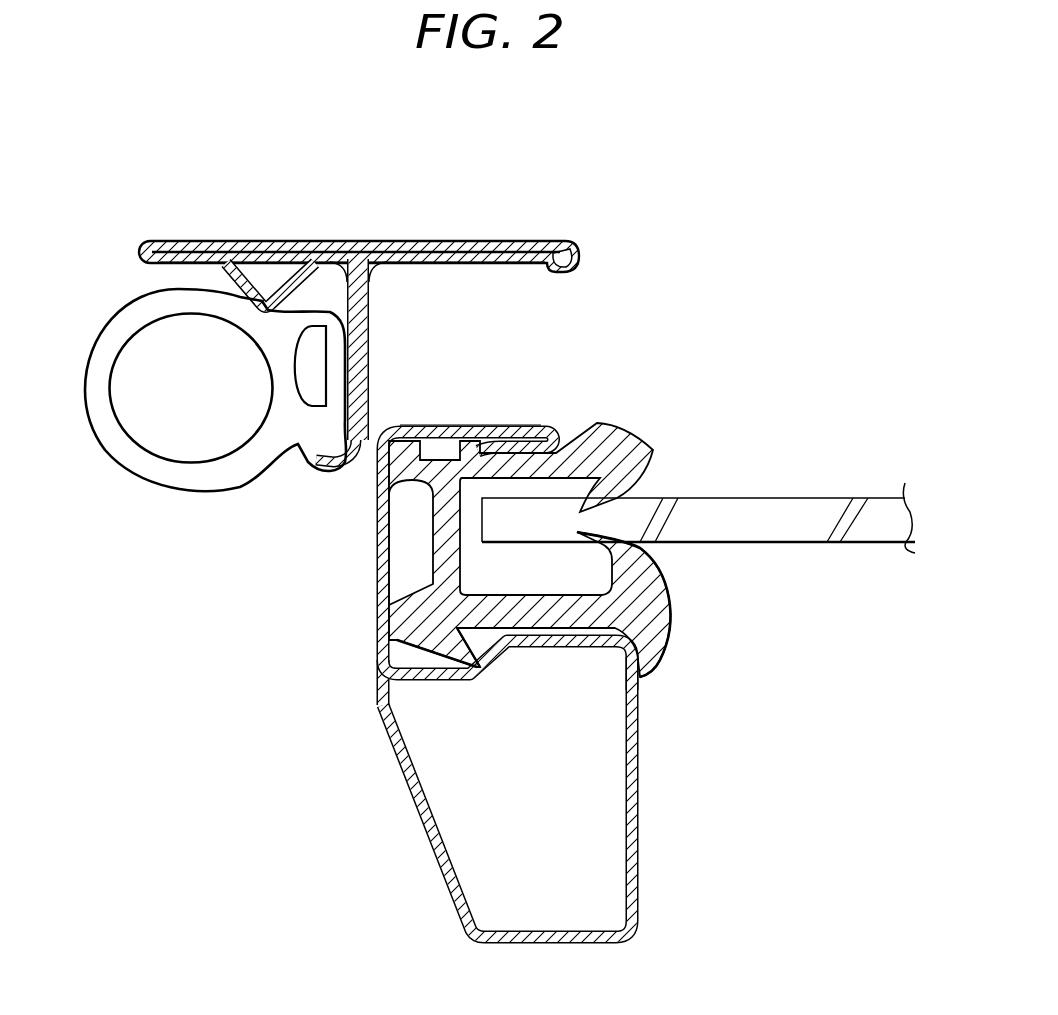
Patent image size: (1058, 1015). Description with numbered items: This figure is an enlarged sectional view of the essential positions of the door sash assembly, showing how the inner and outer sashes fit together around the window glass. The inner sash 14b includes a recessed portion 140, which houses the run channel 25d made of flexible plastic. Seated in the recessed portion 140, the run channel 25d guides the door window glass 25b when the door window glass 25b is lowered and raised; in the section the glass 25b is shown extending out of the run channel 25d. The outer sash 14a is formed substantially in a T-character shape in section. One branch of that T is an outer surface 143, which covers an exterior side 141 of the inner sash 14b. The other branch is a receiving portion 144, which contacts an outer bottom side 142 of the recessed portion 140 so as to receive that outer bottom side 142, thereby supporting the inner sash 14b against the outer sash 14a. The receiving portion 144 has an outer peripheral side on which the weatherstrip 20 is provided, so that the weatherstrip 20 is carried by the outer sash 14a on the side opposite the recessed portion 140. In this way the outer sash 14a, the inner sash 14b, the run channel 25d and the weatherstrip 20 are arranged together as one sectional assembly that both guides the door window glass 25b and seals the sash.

The outer sash 14a is at (141, 243).
The outer surface 143 is at (415, 242).
The receiving portion 144 is at (371, 343).
The weatherstrip 20 is at (281, 370).
The exterior side 141 is at (510, 426).
The recessed portion 140 is at (407, 508).
The outer bottom side 142 is at (376, 592).
The door window glass 25b is at (790, 508).
The run channel 25d is at (661, 620).
The inner sash 14b is at (634, 937).